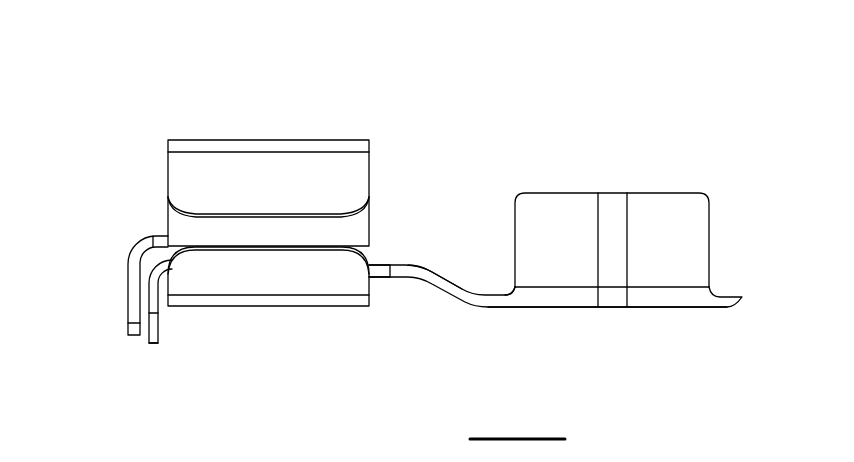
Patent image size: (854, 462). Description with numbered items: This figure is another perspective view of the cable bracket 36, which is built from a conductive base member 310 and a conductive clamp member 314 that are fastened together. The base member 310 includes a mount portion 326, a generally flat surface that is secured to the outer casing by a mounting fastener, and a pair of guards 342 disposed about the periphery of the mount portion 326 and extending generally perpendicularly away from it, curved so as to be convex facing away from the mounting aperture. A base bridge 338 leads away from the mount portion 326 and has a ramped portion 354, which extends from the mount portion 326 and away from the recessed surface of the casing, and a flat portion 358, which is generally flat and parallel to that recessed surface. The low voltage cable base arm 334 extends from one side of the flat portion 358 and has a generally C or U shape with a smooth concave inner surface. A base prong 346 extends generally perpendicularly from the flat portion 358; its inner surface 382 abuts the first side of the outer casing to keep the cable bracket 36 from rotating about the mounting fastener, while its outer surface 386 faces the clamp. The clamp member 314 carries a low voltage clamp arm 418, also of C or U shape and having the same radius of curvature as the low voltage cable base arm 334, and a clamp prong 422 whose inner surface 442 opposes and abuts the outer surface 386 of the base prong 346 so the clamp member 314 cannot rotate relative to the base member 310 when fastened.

The cable bracket 36 is at (129, 102).
The clamp member 314 is at (157, 147).
The low voltage clamp arm 418 is at (247, 185).
The low voltage cable base arm 334 is at (258, 280).
The clamp prong 422 is at (128, 277).
The inner surface 442 is at (150, 296).
The outer surface 386 is at (137, 334).
The inner surface 382 is at (162, 328).
The base prong 346 is at (155, 345).
The flat portion 358 is at (381, 280).
The ramped portion 354 is at (438, 284).
The base bridge 338 is at (412, 265).
The base member 310 is at (628, 338).
The guards 342 is at (653, 210).
The mount portion 326 is at (686, 307).